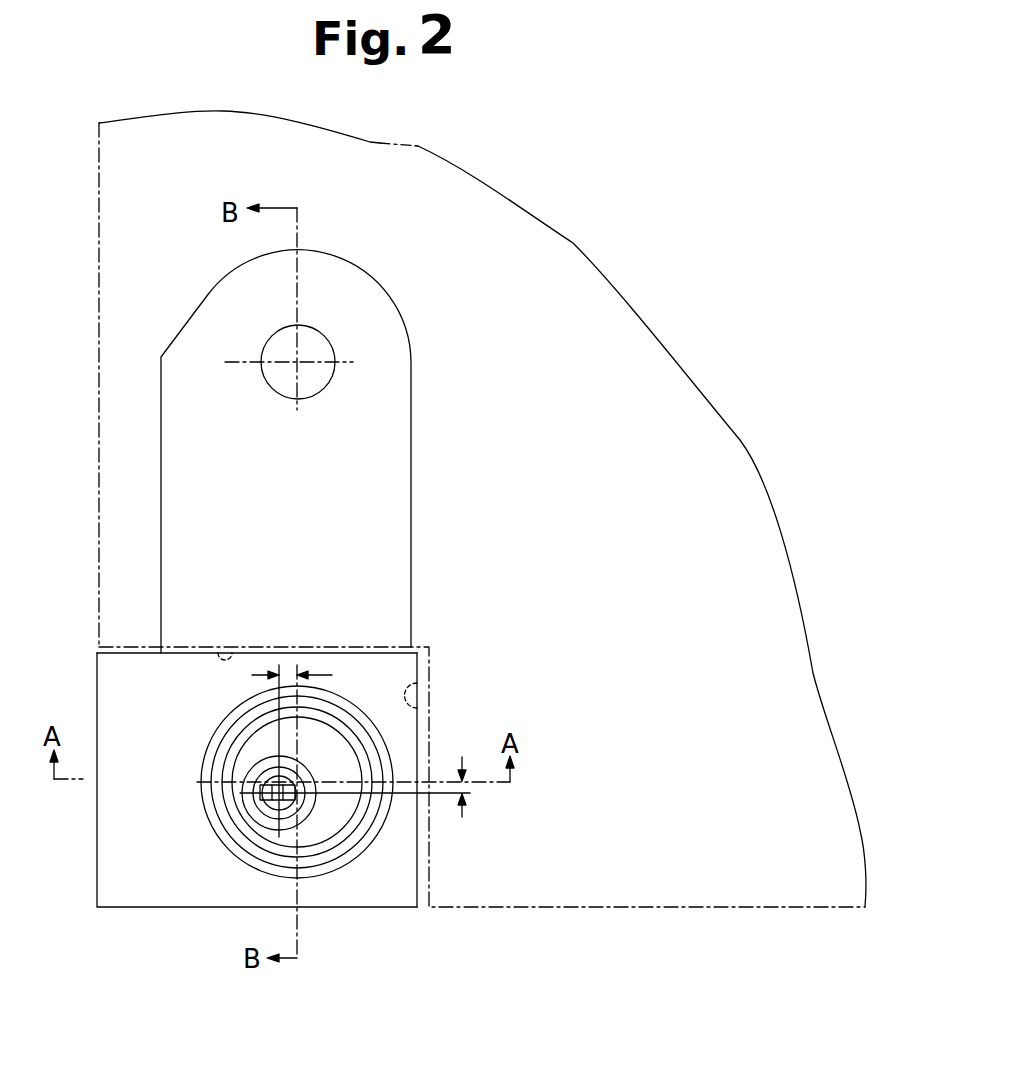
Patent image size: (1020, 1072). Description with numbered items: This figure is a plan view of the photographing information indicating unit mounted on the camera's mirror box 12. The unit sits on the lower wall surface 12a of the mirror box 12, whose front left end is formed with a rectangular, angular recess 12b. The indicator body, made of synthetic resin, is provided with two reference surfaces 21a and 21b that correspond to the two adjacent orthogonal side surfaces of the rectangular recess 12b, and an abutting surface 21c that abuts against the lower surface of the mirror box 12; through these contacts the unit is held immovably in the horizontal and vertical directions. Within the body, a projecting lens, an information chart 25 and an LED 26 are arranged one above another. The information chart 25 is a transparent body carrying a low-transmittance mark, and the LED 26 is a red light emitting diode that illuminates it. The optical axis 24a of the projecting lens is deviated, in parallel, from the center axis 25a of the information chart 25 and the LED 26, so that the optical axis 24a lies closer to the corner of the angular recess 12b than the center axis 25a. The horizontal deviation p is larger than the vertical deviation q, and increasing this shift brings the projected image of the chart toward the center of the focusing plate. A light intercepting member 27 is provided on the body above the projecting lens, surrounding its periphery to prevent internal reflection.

The mirror box 12 is at (682, 400).
The lower wall surface 12a is at (642, 526).
The rectangular recess 12b is at (228, 650).
The reference surface 21a is at (313, 652).
The reference surface 21b is at (418, 868).
The abutting surface 21c is at (411, 487).
The optical axis 24a is at (300, 790).
The information chart 25 is at (232, 881).
The center axis 25a is at (275, 807).
The LED 26 is at (290, 813).
The light intercepting member 27 is at (137, 880).
The horizontal deviation value p is at (267, 666).
The vertical deviation value q is at (468, 786).